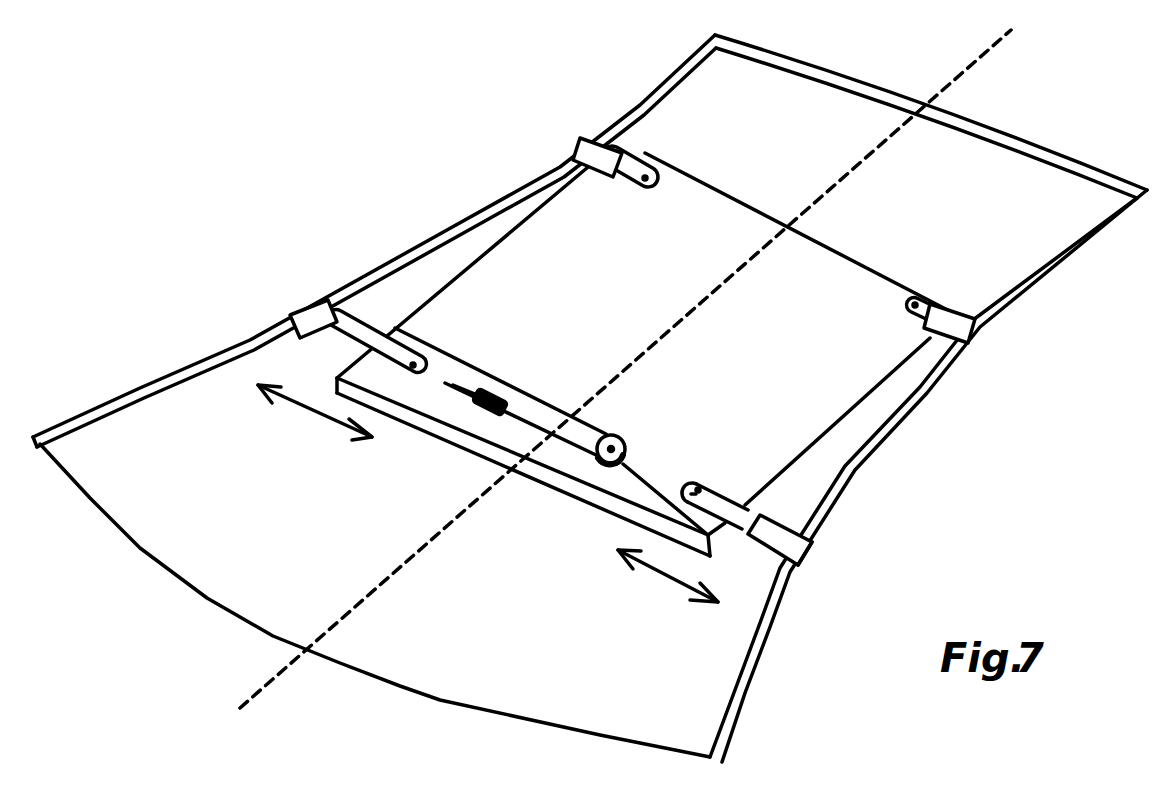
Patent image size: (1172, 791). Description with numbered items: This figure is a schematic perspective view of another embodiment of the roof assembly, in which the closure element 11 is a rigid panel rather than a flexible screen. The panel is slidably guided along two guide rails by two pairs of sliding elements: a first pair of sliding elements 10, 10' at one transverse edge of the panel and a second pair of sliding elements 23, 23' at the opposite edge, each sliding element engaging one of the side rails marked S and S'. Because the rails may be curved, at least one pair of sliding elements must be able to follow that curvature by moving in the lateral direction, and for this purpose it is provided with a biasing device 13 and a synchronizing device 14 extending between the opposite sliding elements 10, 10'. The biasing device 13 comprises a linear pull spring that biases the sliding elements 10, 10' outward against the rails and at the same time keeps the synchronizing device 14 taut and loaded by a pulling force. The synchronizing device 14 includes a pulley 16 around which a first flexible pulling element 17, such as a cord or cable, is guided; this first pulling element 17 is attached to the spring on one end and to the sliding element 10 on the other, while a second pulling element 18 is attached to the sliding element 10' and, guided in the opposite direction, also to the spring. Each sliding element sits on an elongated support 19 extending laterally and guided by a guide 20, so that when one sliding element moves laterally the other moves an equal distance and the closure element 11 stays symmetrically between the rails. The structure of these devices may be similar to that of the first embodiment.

The sliding element 10 is at (846, 553).
The sliding element 10' is at (340, 304).
The closure element 11 is at (793, 363).
The biasing device 13 is at (490, 425).
The synchronizing device 14 is at (590, 472).
The pulley 16 is at (628, 440).
The first flexible pulling element 17 is at (442, 347).
The second pulling element 18 is at (660, 485).
The support 19 is at (752, 530).
The guide 20 is at (748, 495).
The sliding element 23 is at (978, 332).
The sliding element 23' is at (591, 140).
The frame rail S is at (928, 476).
The frame rail S' is at (374, 241).